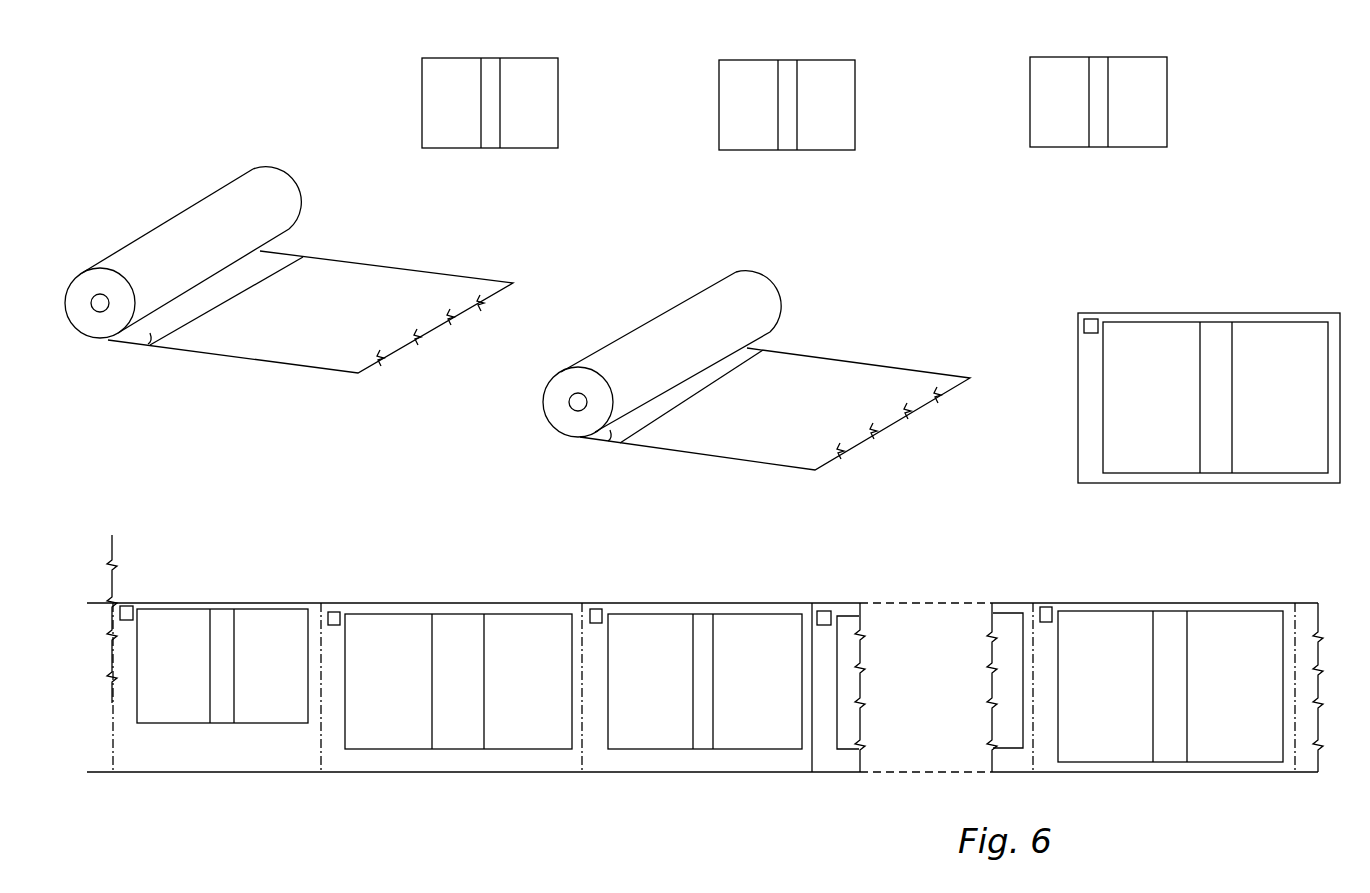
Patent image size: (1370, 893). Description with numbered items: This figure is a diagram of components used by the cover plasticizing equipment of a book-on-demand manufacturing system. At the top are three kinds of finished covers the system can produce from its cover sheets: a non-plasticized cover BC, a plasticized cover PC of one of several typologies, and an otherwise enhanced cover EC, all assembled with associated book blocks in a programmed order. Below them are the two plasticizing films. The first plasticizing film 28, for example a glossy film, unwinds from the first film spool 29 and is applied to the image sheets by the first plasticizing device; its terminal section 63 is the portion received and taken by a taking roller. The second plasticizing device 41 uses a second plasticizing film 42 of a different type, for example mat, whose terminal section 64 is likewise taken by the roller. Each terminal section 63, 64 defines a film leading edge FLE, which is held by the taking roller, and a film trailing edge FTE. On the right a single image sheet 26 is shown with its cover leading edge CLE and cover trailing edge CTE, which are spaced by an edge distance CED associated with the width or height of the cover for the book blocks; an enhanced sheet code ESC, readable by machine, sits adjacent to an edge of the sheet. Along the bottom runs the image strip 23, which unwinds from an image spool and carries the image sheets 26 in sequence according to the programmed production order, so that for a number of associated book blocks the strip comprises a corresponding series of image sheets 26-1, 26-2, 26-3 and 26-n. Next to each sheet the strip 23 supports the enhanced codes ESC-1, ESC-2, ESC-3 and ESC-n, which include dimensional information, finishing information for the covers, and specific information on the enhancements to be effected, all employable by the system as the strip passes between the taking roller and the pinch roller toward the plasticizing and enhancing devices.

The second plasticizing device 41 is at (178, 232).
The second plasticizing film 42 is at (293, 252).
The terminal section of the second plasticizing film 64 is at (289, 270).
The first film spool 29 is at (713, 298).
The first plasticizing film 28 is at (760, 347).
The terminal section of the first plasticizing film 63 is at (756, 356).
The image sheet 26 is at (1050, 323).
The image strip 23 is at (1302, 767).
The enhanced sheet code ESC is at (1090, 335).
The edge distance CED is at (1340, 265).
The cover leading edge CLE is at (1078, 437).
The cover trailing edge CTE is at (1340, 452).
The film trailing edge FTE is at (150, 333).
The film leading edge FLE is at (333, 367).
The non-plasticized cover BC is at (576, 60).
The plasticized cover PC is at (874, 60).
The enhanced cover EC is at (1186, 57).
The first image sheet 26-1 is at (260, 615).
The second image sheet 26-2 is at (527, 615).
The third image sheet 26-3 is at (747, 615).
The nth image sheet 26-n is at (1217, 620).
The first enhanced code ESC-1 is at (132, 605).
The second enhanced code ESC-2 is at (333, 610).
The third enhanced code ESC-3 is at (593, 603).
The nth enhanced code ESC-n is at (1047, 605).